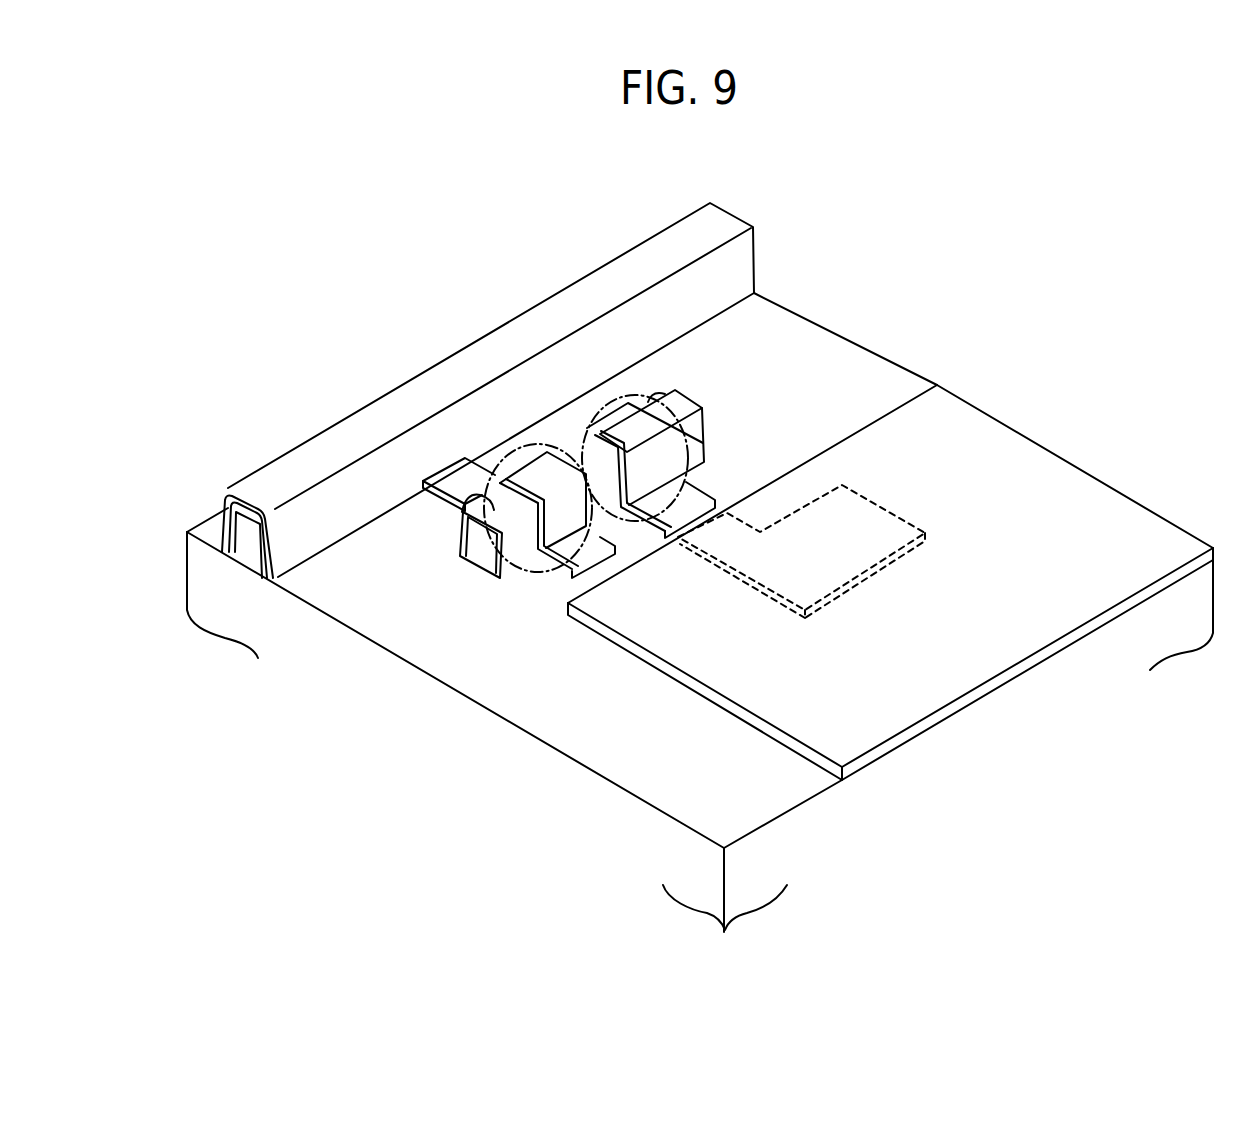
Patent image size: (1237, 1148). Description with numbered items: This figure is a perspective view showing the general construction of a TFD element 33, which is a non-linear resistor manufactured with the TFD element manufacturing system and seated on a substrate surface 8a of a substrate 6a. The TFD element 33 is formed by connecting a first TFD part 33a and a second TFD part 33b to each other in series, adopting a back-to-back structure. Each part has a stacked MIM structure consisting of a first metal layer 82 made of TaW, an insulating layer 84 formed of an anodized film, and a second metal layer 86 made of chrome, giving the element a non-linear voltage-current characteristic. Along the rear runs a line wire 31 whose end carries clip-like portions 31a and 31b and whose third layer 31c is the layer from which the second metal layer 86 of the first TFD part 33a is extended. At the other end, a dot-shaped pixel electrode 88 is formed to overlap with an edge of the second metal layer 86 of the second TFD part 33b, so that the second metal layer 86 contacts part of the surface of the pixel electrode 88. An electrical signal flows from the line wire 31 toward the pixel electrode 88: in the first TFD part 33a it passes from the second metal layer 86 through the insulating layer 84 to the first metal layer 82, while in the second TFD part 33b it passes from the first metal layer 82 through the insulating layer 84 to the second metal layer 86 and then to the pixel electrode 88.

The holder assembly 6a is at (400, 717).
The base plate 8a is at (591, 744).
The line wire 31 is at (372, 293).
The rail end clip 31a is at (237, 538).
The clip inner portion 31b is at (252, 505).
The third layer 31c is at (390, 420).
The TFD element 33 is at (638, 141).
The first TFD part 33a is at (533, 444).
The second TFD part 33b is at (636, 396).
The first metal layer 82 is at (479, 558).
The insulating layer 84 is at (480, 502).
The second metal layer 86 is at (540, 482).
The pixel electrode 88 is at (1068, 490).